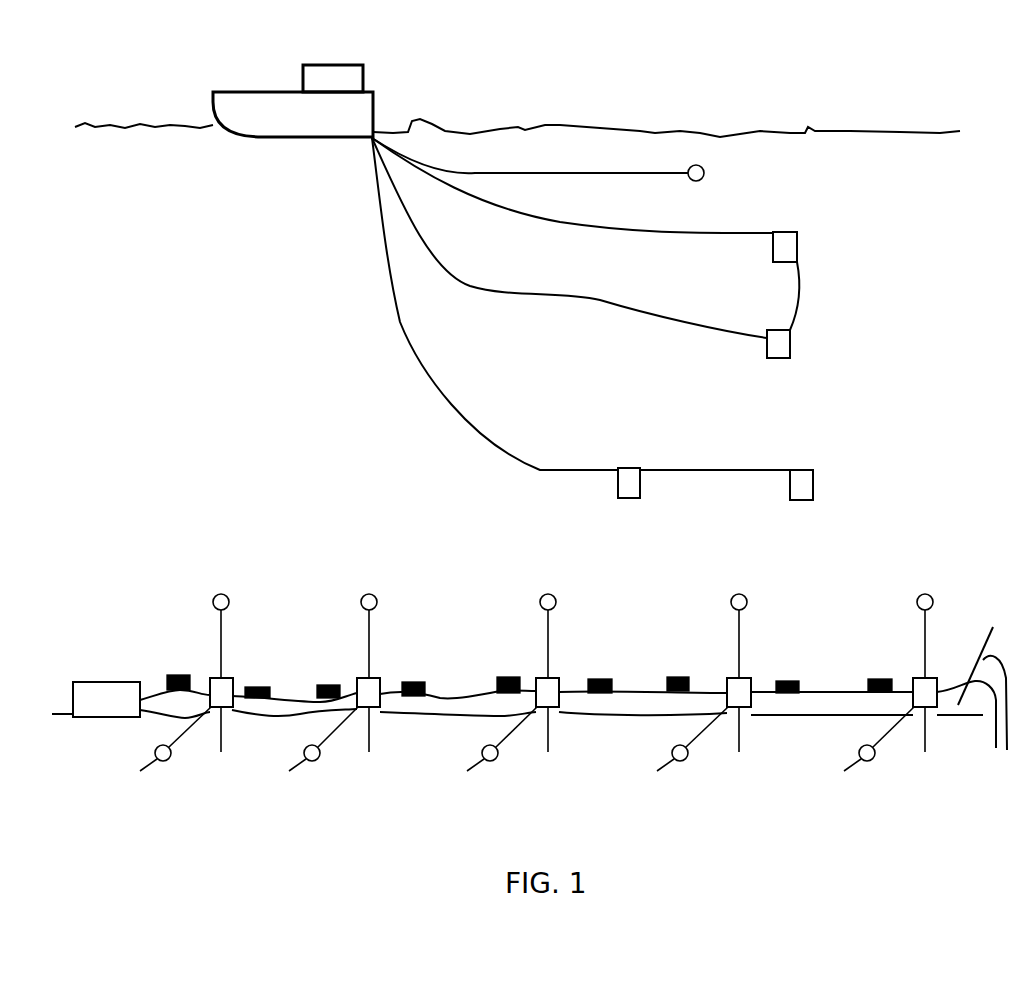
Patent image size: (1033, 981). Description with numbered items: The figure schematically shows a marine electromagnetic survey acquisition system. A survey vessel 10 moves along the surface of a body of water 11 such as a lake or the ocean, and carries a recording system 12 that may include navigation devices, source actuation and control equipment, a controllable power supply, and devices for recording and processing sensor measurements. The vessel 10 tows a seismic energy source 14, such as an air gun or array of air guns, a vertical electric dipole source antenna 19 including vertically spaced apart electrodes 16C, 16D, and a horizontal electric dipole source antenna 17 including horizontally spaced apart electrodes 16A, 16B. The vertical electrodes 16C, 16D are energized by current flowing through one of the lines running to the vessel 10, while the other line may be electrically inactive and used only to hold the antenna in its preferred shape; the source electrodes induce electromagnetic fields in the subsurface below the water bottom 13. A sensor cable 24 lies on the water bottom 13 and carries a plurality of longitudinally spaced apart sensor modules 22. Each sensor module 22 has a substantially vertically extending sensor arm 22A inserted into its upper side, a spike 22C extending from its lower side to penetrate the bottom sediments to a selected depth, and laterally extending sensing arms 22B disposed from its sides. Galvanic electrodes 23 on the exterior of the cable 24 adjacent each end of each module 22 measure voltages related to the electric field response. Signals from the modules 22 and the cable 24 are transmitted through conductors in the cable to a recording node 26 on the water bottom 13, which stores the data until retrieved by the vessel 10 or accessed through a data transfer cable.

The survey vessel 10 is at (252, 100).
The body of water 11 is at (621, 125).
The recording system 12 is at (338, 70).
The water bottom 13 is at (65, 719).
The seismic energy source 14 is at (706, 173).
The electrode 16A is at (628, 478).
The electrode 16B is at (800, 480).
The electrode 16C is at (790, 247).
The electrode 16D is at (785, 348).
The horizontal electric dipole source antenna 17 is at (422, 362).
The vertical electric dipole source antenna 19 is at (605, 302).
The sensor module 22 is at (223, 685).
The vertically extending sensor arm 22A is at (228, 597).
The laterally extending sensing arm 22B is at (513, 754).
The spike 22C is at (223, 720).
The galvanic electrode 23 is at (882, 679).
The sensor cable 24 is at (157, 698).
The recording node 26 is at (96, 688).